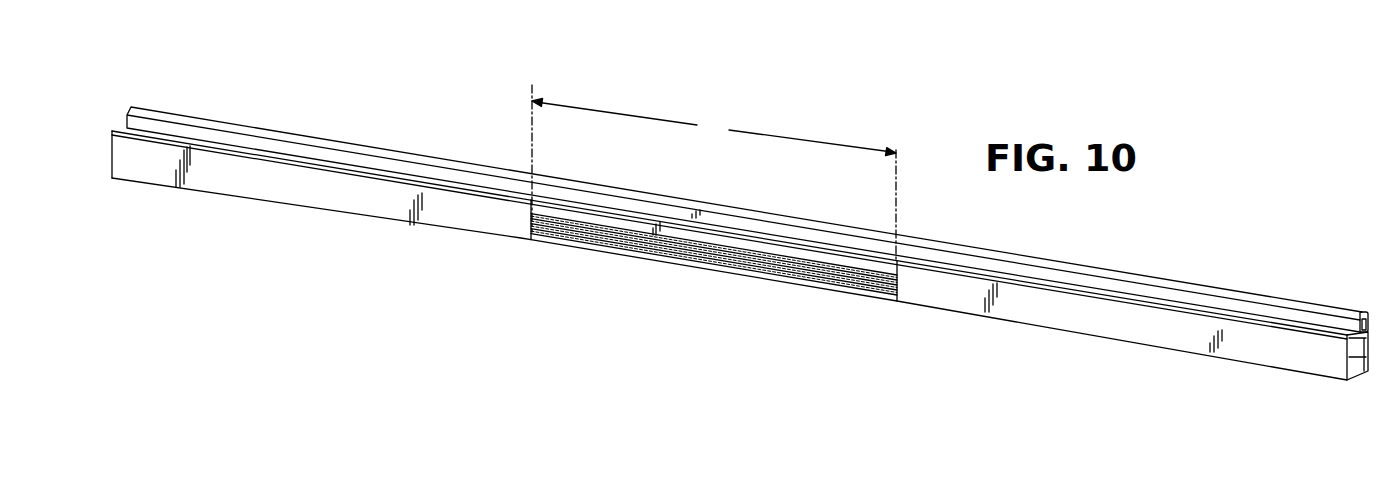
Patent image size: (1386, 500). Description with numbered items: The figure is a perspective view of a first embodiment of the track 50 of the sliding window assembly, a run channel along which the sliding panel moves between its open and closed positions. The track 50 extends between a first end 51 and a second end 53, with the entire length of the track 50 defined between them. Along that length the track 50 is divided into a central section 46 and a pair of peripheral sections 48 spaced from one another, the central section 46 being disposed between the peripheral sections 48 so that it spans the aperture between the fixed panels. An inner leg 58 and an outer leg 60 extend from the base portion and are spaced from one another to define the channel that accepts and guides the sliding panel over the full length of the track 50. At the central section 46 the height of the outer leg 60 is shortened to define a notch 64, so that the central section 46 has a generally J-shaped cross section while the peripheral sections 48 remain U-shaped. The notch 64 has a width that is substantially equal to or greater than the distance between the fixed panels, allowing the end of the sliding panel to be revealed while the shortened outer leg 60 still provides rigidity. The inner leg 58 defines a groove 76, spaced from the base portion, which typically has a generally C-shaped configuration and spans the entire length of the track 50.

The track 50 is at (476, 132).
The first end 51 is at (110, 121).
The inner leg 58 is at (1168, 285).
The groove 76 is at (1366, 308).
The second end 53 is at (1363, 386).
The peripheral sections 48 is at (530, 250).
The central section 46 is at (537, 250).
The outer leg 60 is at (271, 182).
The notch 64 is at (622, 246).